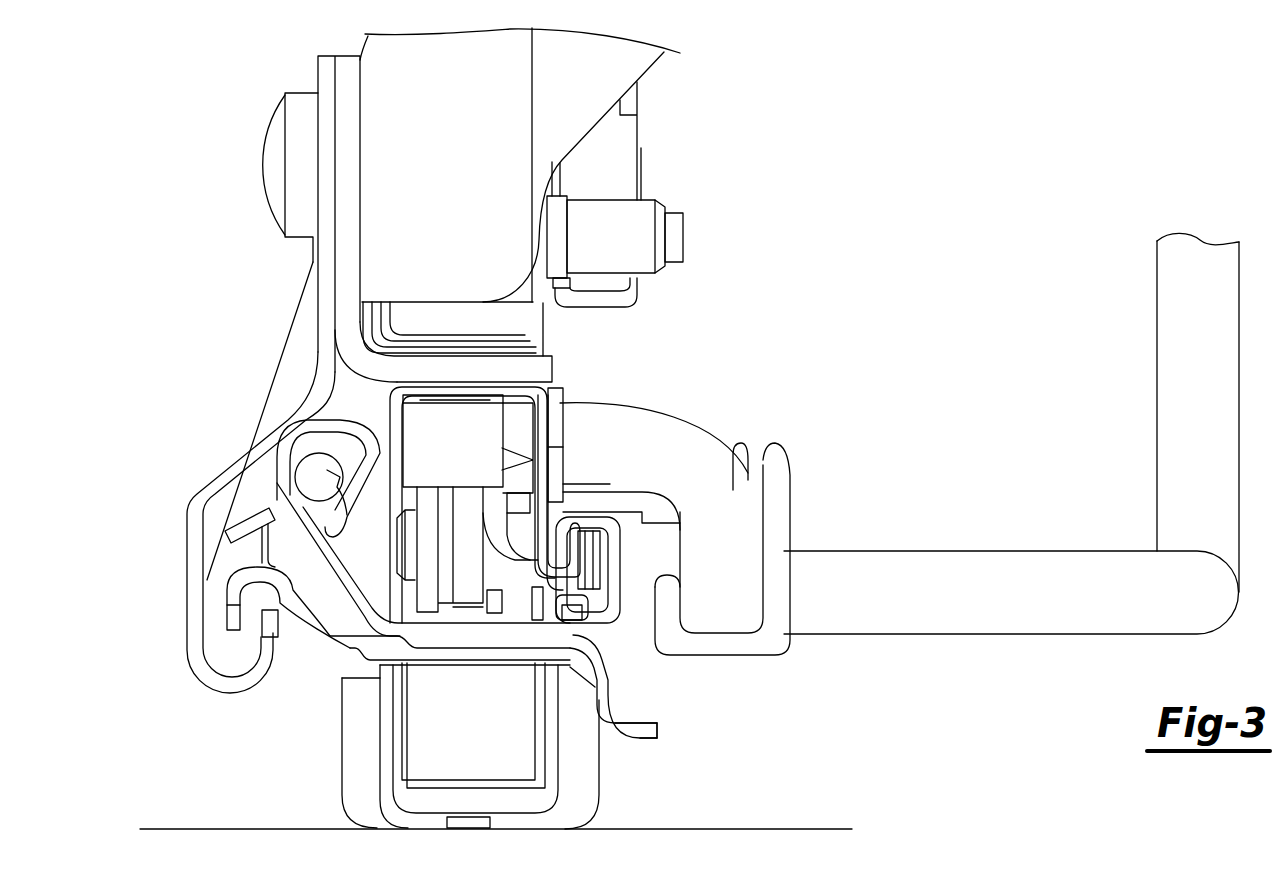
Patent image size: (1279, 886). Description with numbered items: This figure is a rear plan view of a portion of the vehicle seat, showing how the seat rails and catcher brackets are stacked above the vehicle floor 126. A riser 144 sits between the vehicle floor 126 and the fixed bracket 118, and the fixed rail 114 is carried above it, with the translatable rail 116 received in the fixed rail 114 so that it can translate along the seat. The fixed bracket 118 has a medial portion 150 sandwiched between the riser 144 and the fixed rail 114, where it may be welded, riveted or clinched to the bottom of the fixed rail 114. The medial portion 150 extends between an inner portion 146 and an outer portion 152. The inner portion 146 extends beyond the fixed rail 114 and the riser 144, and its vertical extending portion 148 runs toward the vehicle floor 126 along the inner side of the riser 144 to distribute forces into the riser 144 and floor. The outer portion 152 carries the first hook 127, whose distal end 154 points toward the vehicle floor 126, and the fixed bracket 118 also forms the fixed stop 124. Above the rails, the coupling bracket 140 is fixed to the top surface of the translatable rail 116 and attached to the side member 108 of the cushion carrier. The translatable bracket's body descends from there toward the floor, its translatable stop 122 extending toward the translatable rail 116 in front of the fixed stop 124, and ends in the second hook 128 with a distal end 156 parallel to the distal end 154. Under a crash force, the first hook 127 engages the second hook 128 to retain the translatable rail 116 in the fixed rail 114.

The side member 108 is at (488, 160).
The coupling bracket 140 is at (520, 368).
The translatable rail 116 is at (533, 392).
The fixed rail 114 is at (607, 527).
The translatable stop 122 is at (245, 530).
The fixed stop 124 is at (262, 552).
The first hook 127 is at (154, 609).
The distal end 154 is at (237, 620).
The second hook 128 is at (189, 663).
The distal end 156 is at (270, 620).
The outer portion 152 is at (323, 637).
The medial portion 150 is at (468, 657).
The riser 144 is at (365, 742).
The vertical extending portion 148 is at (600, 682).
The fixed bracket 118 is at (686, 760).
The inner portion 146 is at (644, 748).
The vehicle floor 126 is at (812, 829).